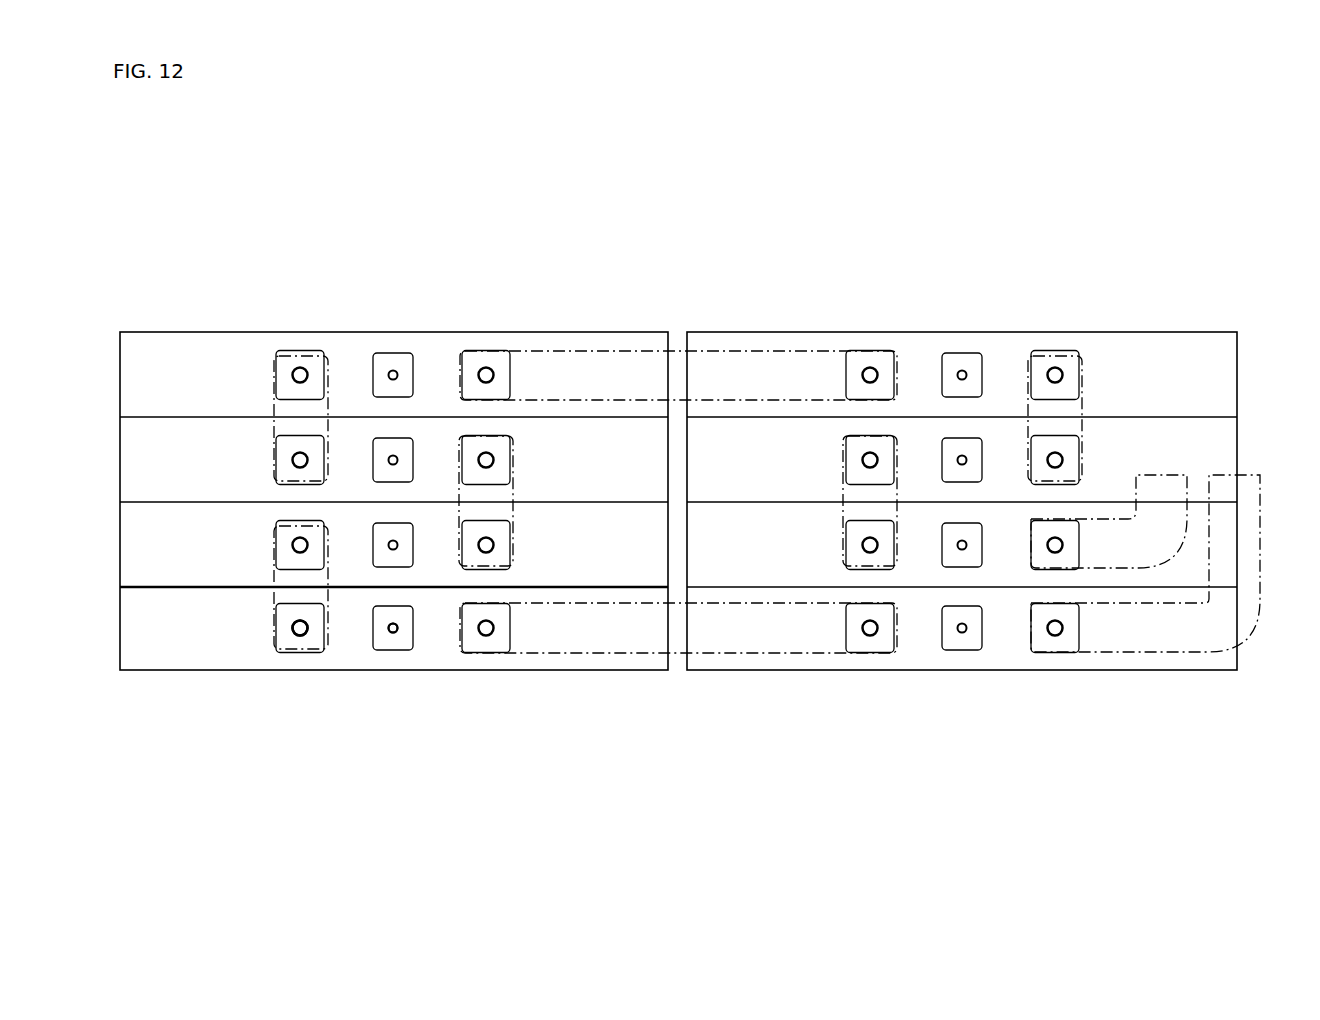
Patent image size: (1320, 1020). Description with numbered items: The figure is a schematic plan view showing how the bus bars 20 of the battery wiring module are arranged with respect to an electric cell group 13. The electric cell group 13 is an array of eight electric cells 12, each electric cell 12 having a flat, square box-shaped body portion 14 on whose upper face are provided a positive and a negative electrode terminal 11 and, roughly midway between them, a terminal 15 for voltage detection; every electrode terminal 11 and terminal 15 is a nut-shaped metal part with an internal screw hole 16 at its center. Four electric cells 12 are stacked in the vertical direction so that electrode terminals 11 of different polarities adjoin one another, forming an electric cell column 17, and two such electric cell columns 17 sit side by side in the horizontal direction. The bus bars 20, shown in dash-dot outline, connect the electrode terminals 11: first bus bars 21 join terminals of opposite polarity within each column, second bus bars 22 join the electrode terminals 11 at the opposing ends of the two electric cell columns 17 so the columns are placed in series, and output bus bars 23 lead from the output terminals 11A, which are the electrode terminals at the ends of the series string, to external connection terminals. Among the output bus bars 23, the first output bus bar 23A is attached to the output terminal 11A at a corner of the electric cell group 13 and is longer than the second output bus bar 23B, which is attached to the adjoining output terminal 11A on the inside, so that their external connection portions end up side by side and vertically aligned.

The electrode terminal 11 is at (487, 372).
The output terminal 11A is at (1060, 643).
The electric cell 12 is at (186, 345).
The electric cell group 13 is at (743, 178).
The body portion 14 is at (142, 465).
The terminal for voltage detection 15 is at (398, 650).
The internal screw hole 16 is at (302, 630).
The electric cell column 17 is at (712, 304).
The bus bar 20 is at (735, 378).
The first bus bar 21 is at (283, 577).
The second bus bar 22 is at (624, 630).
The output bus bar 23 is at (1173, 616).
The first output bus bar 23A is at (1170, 633).
The second output bus bar 23B is at (1160, 525).